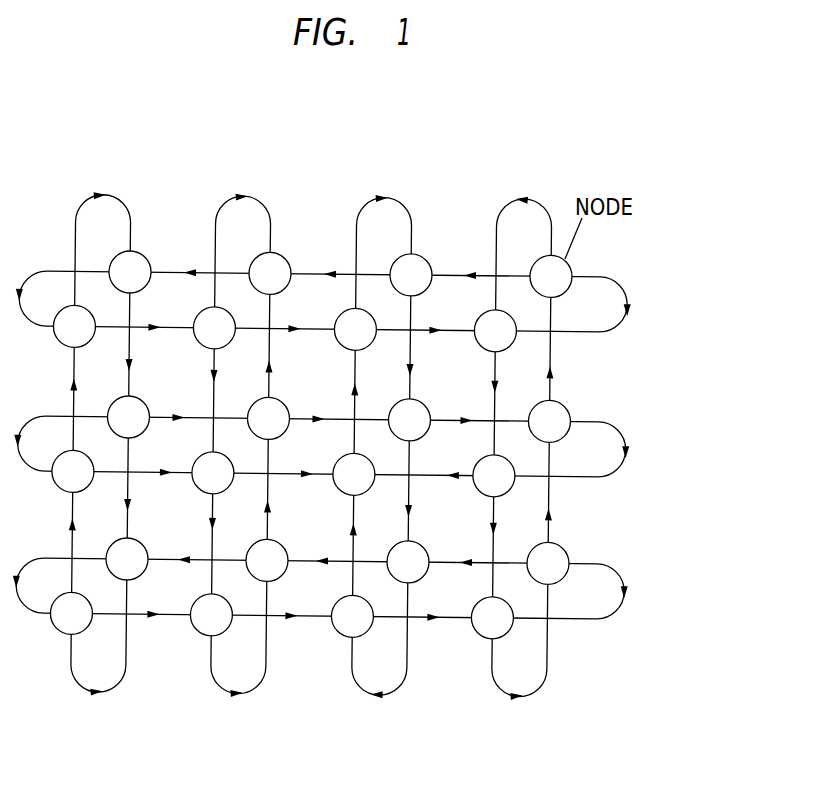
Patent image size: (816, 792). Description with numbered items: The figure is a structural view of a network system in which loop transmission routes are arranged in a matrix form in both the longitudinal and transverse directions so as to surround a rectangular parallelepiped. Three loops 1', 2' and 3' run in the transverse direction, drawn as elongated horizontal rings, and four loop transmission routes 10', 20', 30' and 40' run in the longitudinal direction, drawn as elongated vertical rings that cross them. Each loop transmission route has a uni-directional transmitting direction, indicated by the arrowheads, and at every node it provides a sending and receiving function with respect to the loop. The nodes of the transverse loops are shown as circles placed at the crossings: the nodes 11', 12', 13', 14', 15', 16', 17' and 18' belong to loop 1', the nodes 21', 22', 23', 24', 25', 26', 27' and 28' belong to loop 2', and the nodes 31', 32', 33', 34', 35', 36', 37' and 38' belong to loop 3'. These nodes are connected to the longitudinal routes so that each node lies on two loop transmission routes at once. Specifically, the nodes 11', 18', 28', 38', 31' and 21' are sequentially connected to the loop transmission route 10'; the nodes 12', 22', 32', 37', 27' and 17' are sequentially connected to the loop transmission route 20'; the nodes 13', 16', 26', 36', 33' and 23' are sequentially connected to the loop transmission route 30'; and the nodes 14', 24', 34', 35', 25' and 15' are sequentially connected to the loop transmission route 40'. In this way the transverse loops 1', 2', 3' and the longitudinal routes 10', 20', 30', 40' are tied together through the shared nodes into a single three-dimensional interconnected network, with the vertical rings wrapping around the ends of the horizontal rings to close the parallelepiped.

The loop transmission route 10' is at (132, 418).
The loop transmission route 20' is at (267, 419).
The loop transmission route 30' is at (411, 420).
The loop transmission route 40' is at (551, 422).
The loop 1' is at (348, 285).
The loop 2' is at (361, 438).
The loop 3' is at (353, 576).
The node 11' is at (74, 326).
The node 12' is at (214, 328).
The node 13' is at (355, 329).
The node 14' is at (495, 331).
The node 15' is at (551, 276).
The node 16' is at (411, 275).
The node 17' is at (270, 273).
The node 18' is at (130, 272).
The node 21' is at (73, 471).
The node 22' is at (213, 473).
The node 23' is at (354, 474).
The node 24' is at (494, 476).
The node 25' is at (549, 421).
The node 26' is at (409, 420).
The node 27' is at (268, 418).
The node 28' is at (128, 417).
The node 31' is at (71, 613).
The node 32' is at (211, 615).
The node 33' is at (352, 616).
The node 34' is at (492, 618).
The node 35' is at (548, 563).
The node 36' is at (408, 562).
The node 37' is at (267, 560).
The node 38' is at (127, 559).